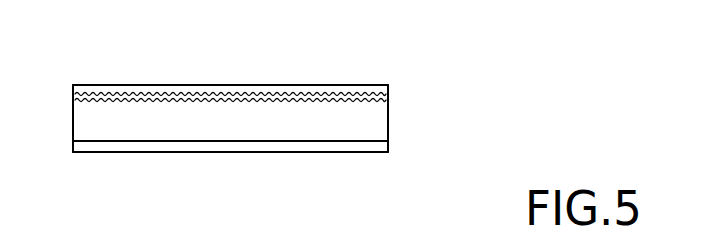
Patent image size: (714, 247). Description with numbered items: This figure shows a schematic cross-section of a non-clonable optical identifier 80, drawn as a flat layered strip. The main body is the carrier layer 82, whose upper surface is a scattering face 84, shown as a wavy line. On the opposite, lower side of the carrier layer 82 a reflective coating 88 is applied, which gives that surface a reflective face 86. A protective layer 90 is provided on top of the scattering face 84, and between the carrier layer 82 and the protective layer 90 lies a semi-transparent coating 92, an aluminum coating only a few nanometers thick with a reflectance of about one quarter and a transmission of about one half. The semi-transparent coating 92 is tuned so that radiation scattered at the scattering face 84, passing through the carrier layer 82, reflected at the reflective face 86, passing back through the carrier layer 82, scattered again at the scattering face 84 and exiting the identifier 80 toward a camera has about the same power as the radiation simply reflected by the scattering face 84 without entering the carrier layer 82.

The identifier 80 is at (423, 82).
The carrier layer 82 is at (388, 120).
The scattering face 84 is at (90, 100).
The reflective face 86 is at (298, 135).
The reflective coating 88 is at (105, 153).
The protective layer 90 is at (220, 85).
The semi-transparent coating 92 is at (133, 93).